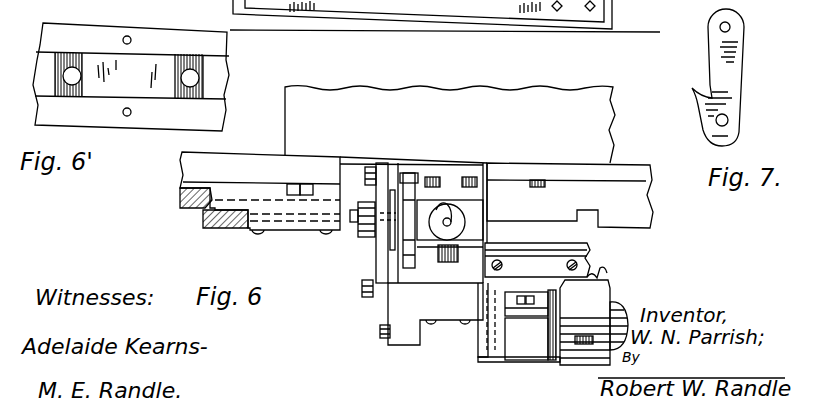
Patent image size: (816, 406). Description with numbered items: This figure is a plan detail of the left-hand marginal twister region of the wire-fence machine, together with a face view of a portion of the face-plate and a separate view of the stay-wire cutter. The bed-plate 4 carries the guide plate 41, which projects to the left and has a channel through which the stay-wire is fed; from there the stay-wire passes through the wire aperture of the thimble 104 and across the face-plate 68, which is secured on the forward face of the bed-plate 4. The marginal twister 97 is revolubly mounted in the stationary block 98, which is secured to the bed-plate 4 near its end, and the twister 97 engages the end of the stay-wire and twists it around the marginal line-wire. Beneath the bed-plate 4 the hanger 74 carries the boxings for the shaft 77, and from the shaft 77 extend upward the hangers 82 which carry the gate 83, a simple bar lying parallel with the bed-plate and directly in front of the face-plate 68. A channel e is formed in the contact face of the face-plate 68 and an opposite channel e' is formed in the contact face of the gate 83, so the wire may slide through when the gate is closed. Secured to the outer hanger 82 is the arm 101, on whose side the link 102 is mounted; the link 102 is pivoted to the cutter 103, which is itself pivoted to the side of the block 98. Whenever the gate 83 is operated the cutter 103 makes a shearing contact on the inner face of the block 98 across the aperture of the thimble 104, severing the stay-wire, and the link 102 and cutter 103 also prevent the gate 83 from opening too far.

In FIG. 6', the face-plate 68 is at (101, 40).
In FIG. 6, the face-plate 68 is at (570, 195).
In FIG. 6', the channel e is at (129, 109).
In FIG. 6, the channel e' is at (586, 233).
In FIG. 7, the cutter 103 is at (707, 58).
In FIG. 6, the cutter 103 is at (406, 173).
In FIG. 6, the guide plate 41 is at (260, 193).
In FIG. 6, the thimble 104 is at (356, 240).
In FIG. 6, the stationary block 98 is at (382, 165).
In FIG. 6, the bed-plate 4 is at (404, 117).
In FIG. 6, the marginal twister 97 is at (448, 205).
In FIG. 6, the gate 83 is at (590, 259).
In FIG. 6, the arm 101 is at (474, 322).
In FIG. 6, the link 102 is at (388, 314).
In FIG. 6, the hanger 82 is at (530, 325).
In FIG. 6, the hanger 74 is at (585, 322).
In FIG. 6, the shaft 77 is at (625, 305).